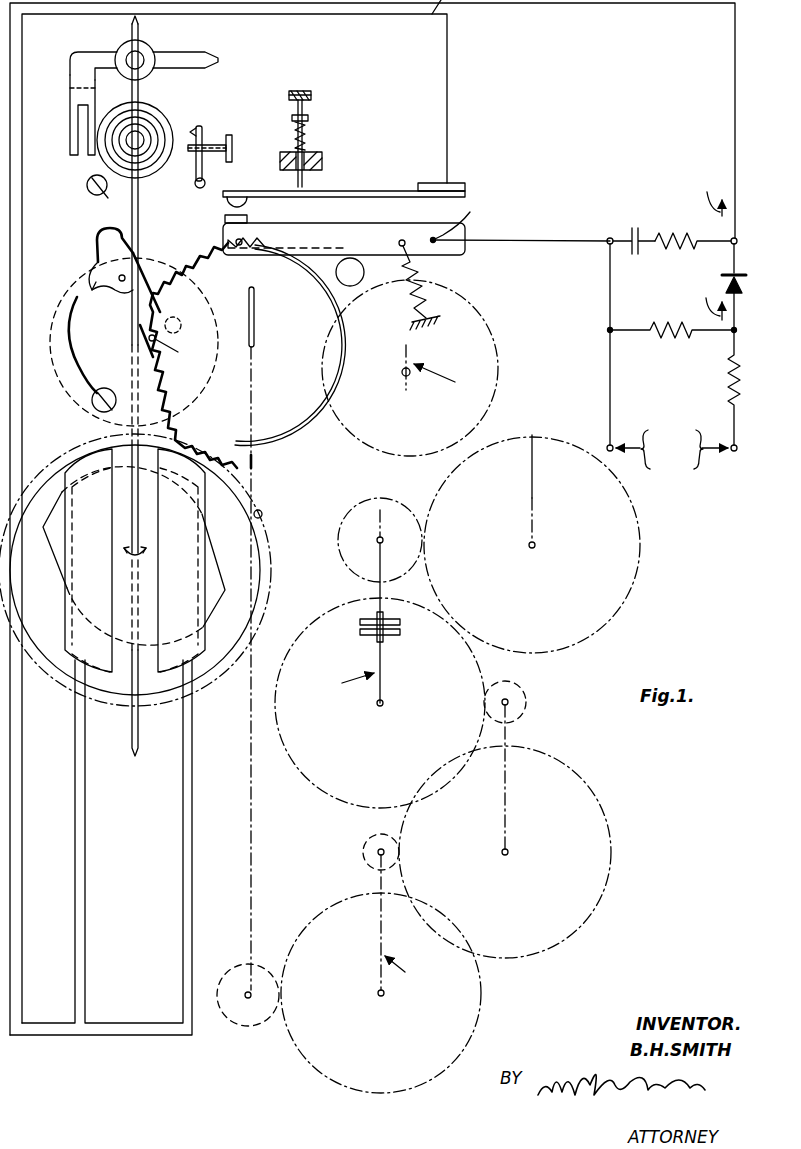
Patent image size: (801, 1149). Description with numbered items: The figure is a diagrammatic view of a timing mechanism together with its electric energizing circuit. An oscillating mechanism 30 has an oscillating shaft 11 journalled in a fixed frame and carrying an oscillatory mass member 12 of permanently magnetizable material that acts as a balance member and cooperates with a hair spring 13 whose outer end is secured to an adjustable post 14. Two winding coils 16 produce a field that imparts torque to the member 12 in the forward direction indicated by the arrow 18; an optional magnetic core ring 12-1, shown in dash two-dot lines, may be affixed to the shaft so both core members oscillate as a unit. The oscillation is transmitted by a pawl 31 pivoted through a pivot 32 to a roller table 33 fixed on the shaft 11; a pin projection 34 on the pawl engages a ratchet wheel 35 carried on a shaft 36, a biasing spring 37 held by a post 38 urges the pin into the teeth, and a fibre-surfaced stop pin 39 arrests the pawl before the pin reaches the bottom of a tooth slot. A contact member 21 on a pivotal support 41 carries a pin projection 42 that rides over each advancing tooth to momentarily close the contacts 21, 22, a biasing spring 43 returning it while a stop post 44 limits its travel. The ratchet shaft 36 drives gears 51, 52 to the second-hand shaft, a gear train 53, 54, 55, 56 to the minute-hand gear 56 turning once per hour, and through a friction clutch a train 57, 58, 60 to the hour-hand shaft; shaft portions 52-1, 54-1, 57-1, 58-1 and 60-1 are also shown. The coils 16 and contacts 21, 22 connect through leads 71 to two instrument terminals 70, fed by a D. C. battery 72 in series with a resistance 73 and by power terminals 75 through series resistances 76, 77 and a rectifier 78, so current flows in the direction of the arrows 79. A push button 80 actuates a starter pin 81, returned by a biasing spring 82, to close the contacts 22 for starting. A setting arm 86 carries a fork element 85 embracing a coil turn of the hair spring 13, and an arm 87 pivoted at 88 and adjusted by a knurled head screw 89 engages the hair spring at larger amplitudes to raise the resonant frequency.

The oscillating shaft 11 is at (138, 208).
The oscillatory mass member 12 is at (58, 512).
The magnetic core ring 12-1 is at (266, 512).
The hair spring 13 is at (160, 110).
The post 14 is at (87, 185).
The winding coils 16 is at (70, 655).
The arrow 18 is at (140, 558).
The contact member 21 is at (350, 238).
The contact 22 is at (344, 196).
The oscillating mechanism 30 is at (288, 490).
The pawl 31 is at (100, 295).
The pivot 32 is at (119, 276).
The roller table 33 is at (70, 390).
The pin projection 34 is at (178, 352).
The ratchet wheel 35 is at (196, 262).
The shaft 36 is at (254, 318).
The biasing spring 37 is at (70, 362).
The post 38 is at (104, 388).
The stop pin 39 is at (177, 318).
The pivotal support 41 is at (462, 217).
The pin projection 42 is at (228, 240).
The biasing spring 43 is at (426, 277).
The stop post 44 is at (364, 272).
The gear 51 is at (247, 1015).
The gear 52 is at (336, 926).
The gear shaft 52-1 is at (378, 878).
The gear 53 is at (367, 846).
The gear 54 is at (600, 810).
The gear shaft 54-1 is at (520, 746).
The gear 55 is at (520, 696).
The gear 56 is at (336, 793).
The gear 57 is at (382, 512).
The shaft with clutch 57-1 is at (378, 584).
The gear 58 is at (640, 553).
The gear shaft 58-1 is at (540, 433).
The gear 60 is at (480, 302).
The gear shaft 60-1 is at (403, 380).
The instrument terminals 70 is at (608, 246).
The leads 71 is at (42, 752).
The D. C. battery 72 is at (631, 232).
The resistance 73 is at (672, 232).
The power terminals 75 is at (613, 444).
The series resistance 76 is at (726, 380).
The series resistance 77 is at (672, 338).
The rectifier 78 is at (740, 282).
The arrows 79 is at (706, 247).
The button 80 is at (300, 90).
The starter pin 81 is at (308, 107).
The biasing spring 82 is at (310, 133).
The fork element 85 is at (70, 100).
The setting arm 86 is at (176, 60).
The arm 87 is at (204, 128).
The pivot 88 is at (200, 188).
The knurled head screw 89 is at (229, 140).